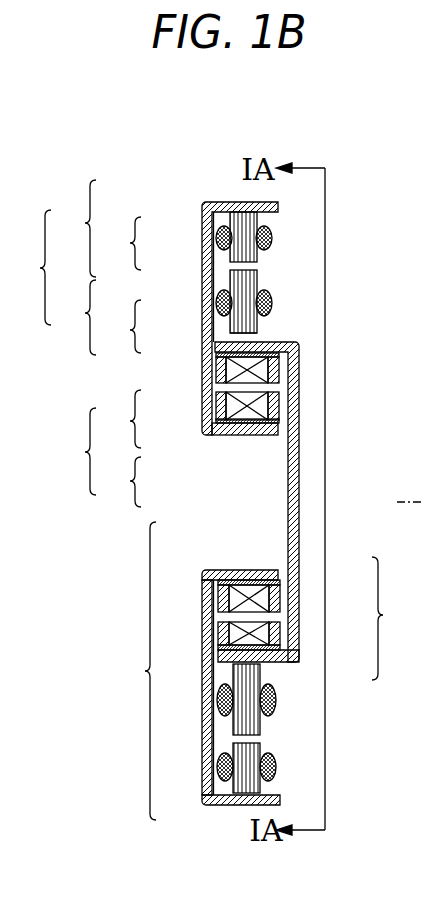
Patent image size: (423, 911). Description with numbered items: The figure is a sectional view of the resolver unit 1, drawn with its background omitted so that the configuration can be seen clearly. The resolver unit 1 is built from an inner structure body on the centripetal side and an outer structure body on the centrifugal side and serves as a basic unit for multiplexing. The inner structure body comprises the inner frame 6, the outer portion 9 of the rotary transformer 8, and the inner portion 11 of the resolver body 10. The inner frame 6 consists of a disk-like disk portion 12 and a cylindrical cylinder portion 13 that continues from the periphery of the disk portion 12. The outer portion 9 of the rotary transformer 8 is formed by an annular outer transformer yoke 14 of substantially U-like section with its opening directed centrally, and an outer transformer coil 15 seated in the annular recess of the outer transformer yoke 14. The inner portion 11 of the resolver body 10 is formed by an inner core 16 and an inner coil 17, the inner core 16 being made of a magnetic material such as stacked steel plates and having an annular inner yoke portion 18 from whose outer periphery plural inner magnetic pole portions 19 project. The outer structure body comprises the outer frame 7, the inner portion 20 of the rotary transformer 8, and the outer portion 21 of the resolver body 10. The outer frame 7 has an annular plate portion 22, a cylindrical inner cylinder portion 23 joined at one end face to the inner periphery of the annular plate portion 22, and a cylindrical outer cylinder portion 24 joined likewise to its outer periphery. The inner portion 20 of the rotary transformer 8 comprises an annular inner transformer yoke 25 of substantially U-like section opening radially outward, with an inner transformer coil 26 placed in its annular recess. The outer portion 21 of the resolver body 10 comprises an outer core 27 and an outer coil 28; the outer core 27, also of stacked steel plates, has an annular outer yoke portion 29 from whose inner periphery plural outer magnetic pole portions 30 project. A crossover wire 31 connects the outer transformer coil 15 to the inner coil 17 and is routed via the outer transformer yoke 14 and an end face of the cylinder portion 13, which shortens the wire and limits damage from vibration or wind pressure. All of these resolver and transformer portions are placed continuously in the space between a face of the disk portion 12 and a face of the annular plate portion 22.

The resolver unit 1 is at (161, 173).
The inner frame 6 is at (387, 618).
The outer frame 7 is at (141, 671).
The rotary transformer 8 is at (81, 451).
The outer portion of the rotary transformer 9 is at (125, 419).
The resolver body 10 is at (30, 267).
The inner portion of the resolver body 11 is at (74, 317).
The disk portion 12 is at (299, 549).
The cylinder portion 13 is at (282, 664).
The outer transformer yoke 14 is at (219, 365).
The outer transformer coil 15 is at (232, 373).
The inner core 16 is at (118, 326).
The inner coil 17 is at (244, 272).
The inner yoke portion 18 is at (232, 332).
The inner magnetic pole portions 19 is at (236, 296).
The inner portion of the rotary transformer 20 is at (118, 482).
The outer portion of the resolver body 21 is at (74, 228).
The annular plate portion 22 is at (204, 671).
The inner cylinder portion 23 is at (223, 571).
The outer cylinder portion 24 is at (233, 800).
The inner transformer yoke 25 is at (222, 410).
The inner transformer coil 26 is at (222, 430).
The outer core 27 is at (118, 243).
The outer coil 28 is at (243, 201).
The outer yoke portion 29 is at (238, 224).
The outer magnetic pole portions 30 is at (226, 248).
The crossover wire 31 is at (214, 350).